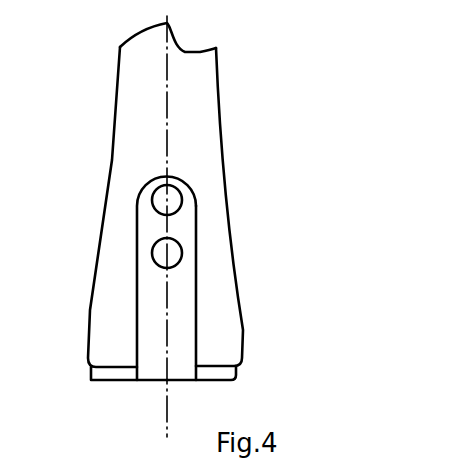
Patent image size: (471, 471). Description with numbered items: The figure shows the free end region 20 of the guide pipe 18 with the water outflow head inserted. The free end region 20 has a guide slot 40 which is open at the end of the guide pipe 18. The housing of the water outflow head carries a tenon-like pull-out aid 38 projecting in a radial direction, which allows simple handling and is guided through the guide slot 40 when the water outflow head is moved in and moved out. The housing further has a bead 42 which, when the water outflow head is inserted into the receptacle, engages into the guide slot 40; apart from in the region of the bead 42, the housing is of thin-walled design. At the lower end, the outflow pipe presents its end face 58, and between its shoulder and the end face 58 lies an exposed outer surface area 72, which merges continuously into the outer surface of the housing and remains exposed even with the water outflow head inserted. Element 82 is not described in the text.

The guide pipe 18 is at (248, 195).
The free end region 20 is at (232, 129).
The pull-out aid 38 is at (180, 202).
The lower bore 82 is at (180, 254).
The bead 42 is at (181, 295).
The guide slot 40 is at (205, 323).
The exposed outer surface area 72 is at (110, 372).
The end face 58 is at (218, 382).